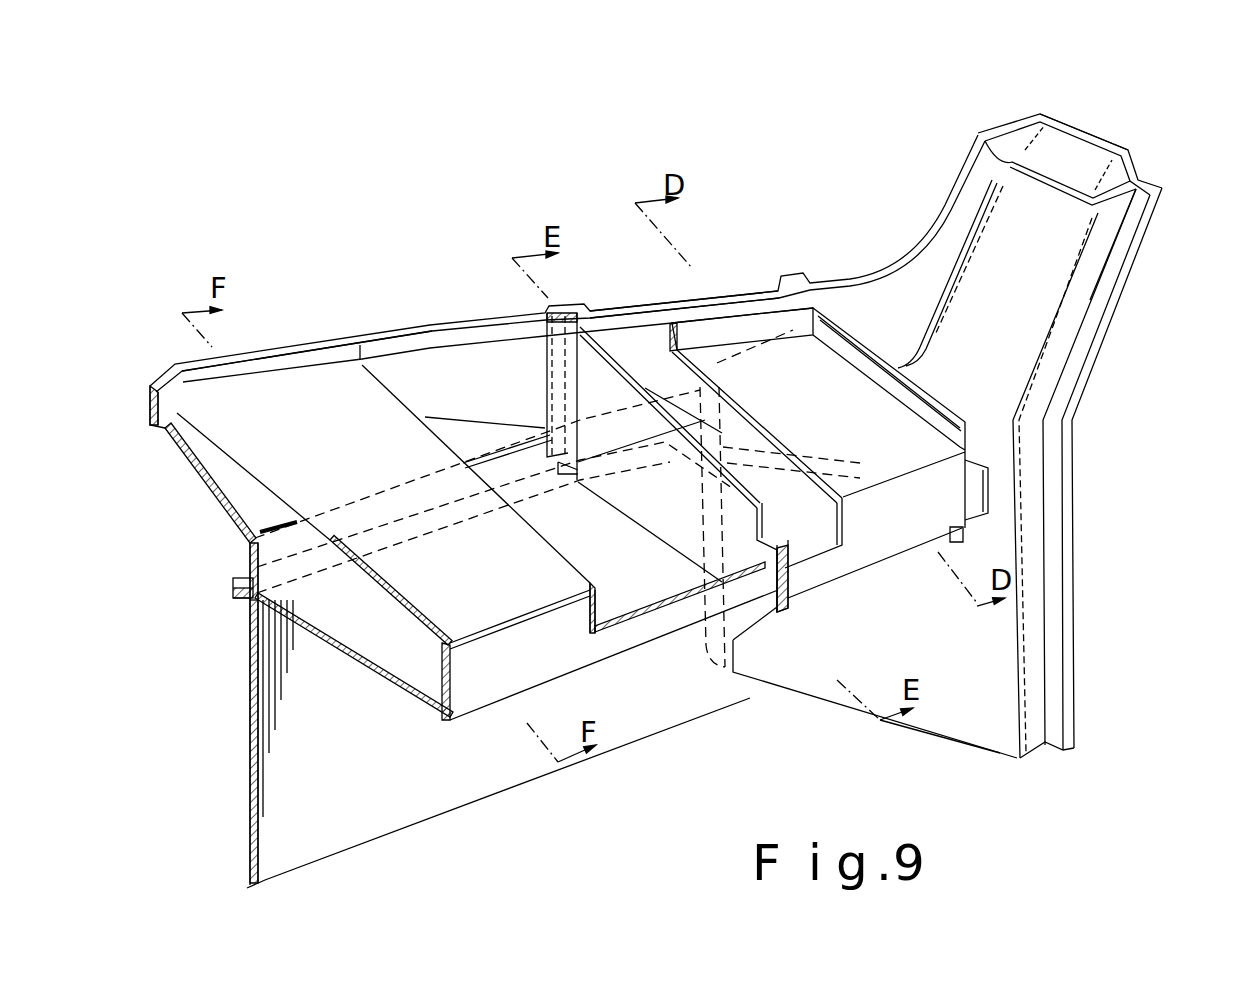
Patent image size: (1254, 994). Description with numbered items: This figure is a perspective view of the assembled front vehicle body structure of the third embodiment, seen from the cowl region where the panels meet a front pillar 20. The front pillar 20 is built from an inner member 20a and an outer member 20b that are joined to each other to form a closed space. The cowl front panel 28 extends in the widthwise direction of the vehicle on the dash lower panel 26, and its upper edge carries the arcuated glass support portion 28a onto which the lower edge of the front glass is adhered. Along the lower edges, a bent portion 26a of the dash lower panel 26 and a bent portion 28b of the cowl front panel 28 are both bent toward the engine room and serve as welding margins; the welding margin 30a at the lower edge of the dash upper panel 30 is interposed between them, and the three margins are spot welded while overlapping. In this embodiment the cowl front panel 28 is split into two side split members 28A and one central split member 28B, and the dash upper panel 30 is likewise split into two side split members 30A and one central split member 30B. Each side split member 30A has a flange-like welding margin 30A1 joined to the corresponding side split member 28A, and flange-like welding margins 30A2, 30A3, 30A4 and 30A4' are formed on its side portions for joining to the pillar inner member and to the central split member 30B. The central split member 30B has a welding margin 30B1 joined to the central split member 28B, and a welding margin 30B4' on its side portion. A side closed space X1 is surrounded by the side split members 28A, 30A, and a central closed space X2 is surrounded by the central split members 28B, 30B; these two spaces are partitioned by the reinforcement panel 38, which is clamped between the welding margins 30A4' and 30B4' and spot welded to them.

The front pillar 20 is at (970, 110).
The inner member 20a is at (1092, 258).
The outer member 20b is at (1113, 142).
The dash lower panel 26 is at (467, 797).
The bent portion 26a is at (240, 605).
The cowl front panel 28 is at (497, 286).
The glass support portion 28a is at (736, 292).
The side split member 28A is at (632, 335).
The central split member 28B is at (471, 370).
The bent portion 28b is at (240, 578).
The dash upper panel 30 is at (815, 598).
The welding margin 30a is at (237, 588).
The side split member 30A is at (898, 537).
The welding margin 30A1 is at (785, 328).
The welding margin 30A2 is at (930, 403).
The welding margin 30A3 is at (985, 500).
The welding margin 30A4 is at (1069, 574).
The welding margin 30A4' is at (798, 542).
The central split member 30B is at (583, 651).
The welding margin 30B1 is at (303, 362).
The welding margin 30B4' is at (771, 606).
The reinforcement panel 38 is at (633, 500).
The side closed space X1 is at (803, 520).
The central closed space X2 is at (641, 582).